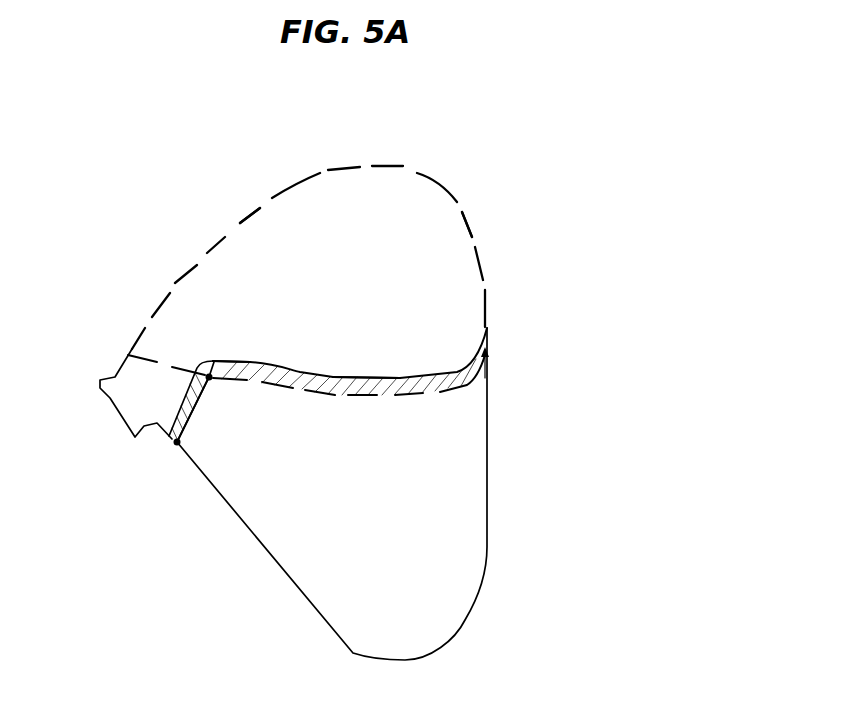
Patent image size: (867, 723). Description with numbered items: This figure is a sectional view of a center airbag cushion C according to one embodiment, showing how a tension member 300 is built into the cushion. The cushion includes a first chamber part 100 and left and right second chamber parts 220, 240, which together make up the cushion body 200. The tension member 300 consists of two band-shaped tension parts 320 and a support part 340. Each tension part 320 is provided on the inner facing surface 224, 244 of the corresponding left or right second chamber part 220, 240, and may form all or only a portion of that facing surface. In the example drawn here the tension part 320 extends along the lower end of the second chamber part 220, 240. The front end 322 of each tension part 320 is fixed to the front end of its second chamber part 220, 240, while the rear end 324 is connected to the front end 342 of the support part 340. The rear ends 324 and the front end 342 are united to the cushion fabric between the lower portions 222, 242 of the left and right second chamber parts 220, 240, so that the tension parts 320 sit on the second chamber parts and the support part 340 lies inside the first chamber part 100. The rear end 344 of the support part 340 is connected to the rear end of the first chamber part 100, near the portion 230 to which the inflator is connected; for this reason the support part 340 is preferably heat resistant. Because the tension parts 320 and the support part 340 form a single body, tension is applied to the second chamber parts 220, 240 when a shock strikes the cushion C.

The first chamber part 100 is at (512, 495).
The cover 200 is at (443, 257).
The left second chamber part 220 is at (308, 257).
The right second chamber part 240 is at (494, 238).
The center airbag cushion C is at (482, 199).
The lower portion of left second chamber part 222 is at (396, 238).
The lower portion of right second chamber part 242 is at (373, 363).
The inner facing surface of left second chamber part 224 is at (191, 182).
The inner facing surface of right second chamber part 244 is at (243, 220).
The tension member 300 is at (307, 444).
The tension part 320 is at (350, 444).
The front end of tension part 322 is at (485, 325).
The rear end of tension part 324 is at (243, 357).
The support part 340 is at (140, 443).
The front end of support part 342 is at (207, 372).
The rear end of support part 344 is at (175, 447).
The portion to which the inflator is connected 230 is at (118, 400).